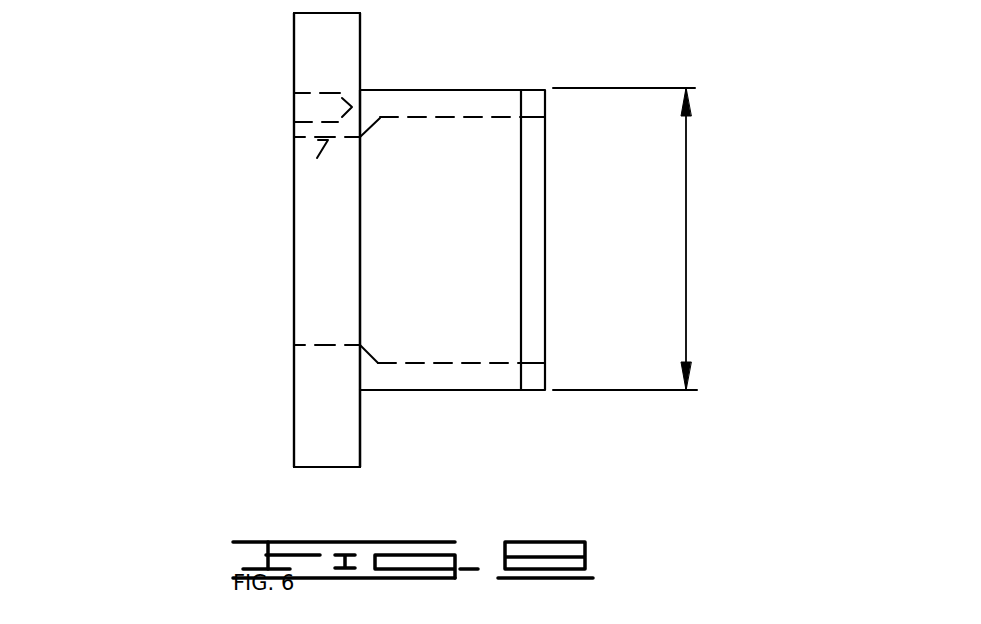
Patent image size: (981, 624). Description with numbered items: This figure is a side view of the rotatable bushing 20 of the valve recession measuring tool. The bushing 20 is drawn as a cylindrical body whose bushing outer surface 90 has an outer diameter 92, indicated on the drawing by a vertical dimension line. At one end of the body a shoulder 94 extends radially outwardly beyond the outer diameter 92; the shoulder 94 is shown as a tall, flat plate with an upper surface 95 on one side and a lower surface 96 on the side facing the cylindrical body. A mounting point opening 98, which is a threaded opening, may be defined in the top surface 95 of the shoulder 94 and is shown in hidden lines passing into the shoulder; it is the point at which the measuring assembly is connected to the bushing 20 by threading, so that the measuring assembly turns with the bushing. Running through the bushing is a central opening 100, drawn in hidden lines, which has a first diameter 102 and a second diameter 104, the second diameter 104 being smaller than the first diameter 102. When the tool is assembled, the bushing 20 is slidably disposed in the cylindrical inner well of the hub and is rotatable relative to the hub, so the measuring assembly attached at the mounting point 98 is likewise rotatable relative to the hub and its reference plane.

The bushing 20 is at (294, 52).
The bushing outer surface 90 is at (442, 89).
The outer diameter 92 is at (686, 242).
The shoulder 94 is at (318, 461).
The upper surface 95 is at (294, 378).
The lower surface 96 is at (360, 442).
The mounting point opening 98 is at (315, 112).
The central opening 100 is at (340, 284).
The first diameter 102 is at (478, 116).
The second diameter 104 is at (317, 158).